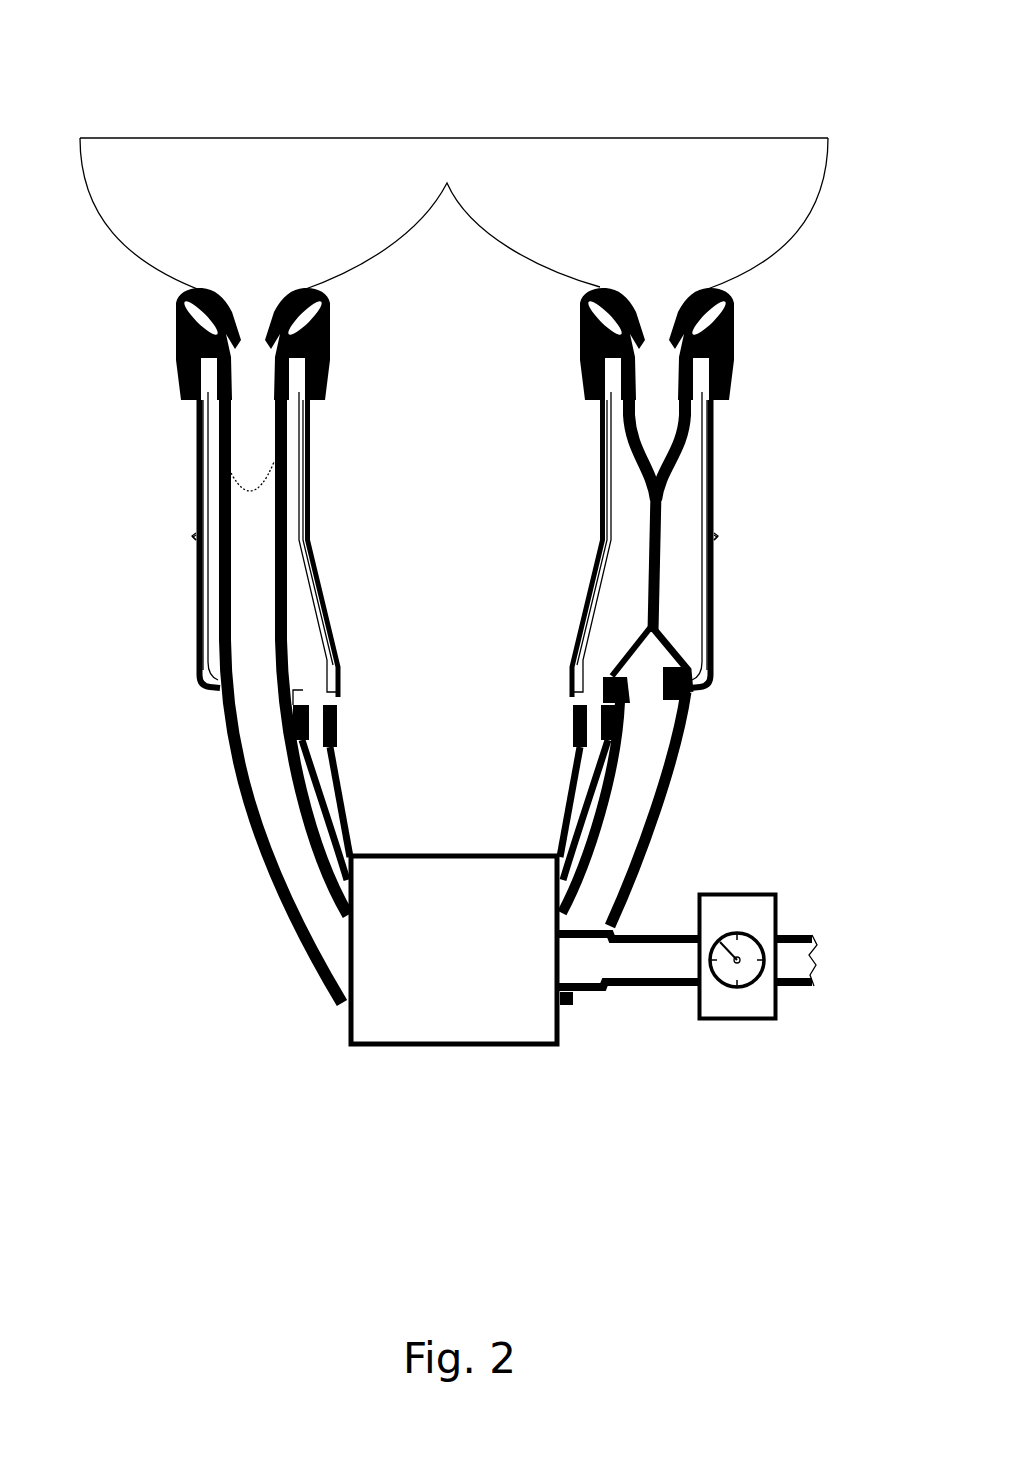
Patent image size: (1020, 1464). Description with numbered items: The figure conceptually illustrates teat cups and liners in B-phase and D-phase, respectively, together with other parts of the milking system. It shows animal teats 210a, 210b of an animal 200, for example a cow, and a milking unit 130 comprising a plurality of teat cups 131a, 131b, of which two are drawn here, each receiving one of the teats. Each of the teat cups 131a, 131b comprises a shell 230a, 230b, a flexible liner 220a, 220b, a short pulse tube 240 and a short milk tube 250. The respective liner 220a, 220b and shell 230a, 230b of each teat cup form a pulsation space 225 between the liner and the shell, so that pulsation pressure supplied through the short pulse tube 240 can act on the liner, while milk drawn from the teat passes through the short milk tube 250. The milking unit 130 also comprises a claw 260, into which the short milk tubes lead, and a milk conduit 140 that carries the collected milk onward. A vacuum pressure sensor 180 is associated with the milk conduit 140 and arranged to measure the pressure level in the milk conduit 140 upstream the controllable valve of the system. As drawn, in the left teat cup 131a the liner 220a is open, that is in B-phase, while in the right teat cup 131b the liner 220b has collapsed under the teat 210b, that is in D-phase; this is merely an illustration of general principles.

The milking unit 130 is at (832, 86).
The animal 200 is at (455, 150).
The animal teat 210a is at (248, 373).
The animal teat 210b is at (658, 375).
The teat cup 131a is at (195, 536).
The teat cup 131b is at (715, 536).
The flexible liner 220a is at (224, 568).
The flexible liner 220b is at (690, 566).
The shell 230a is at (203, 630).
The shell 230b is at (704, 598).
The pulsation space 225 is at (681, 621).
The short pulse tube 240 is at (580, 762).
The short milk tube 250 is at (630, 815).
The claw 260 is at (390, 1002).
The milk conduit 140 is at (618, 960).
The vacuum pressure sensor 180 is at (724, 1000).